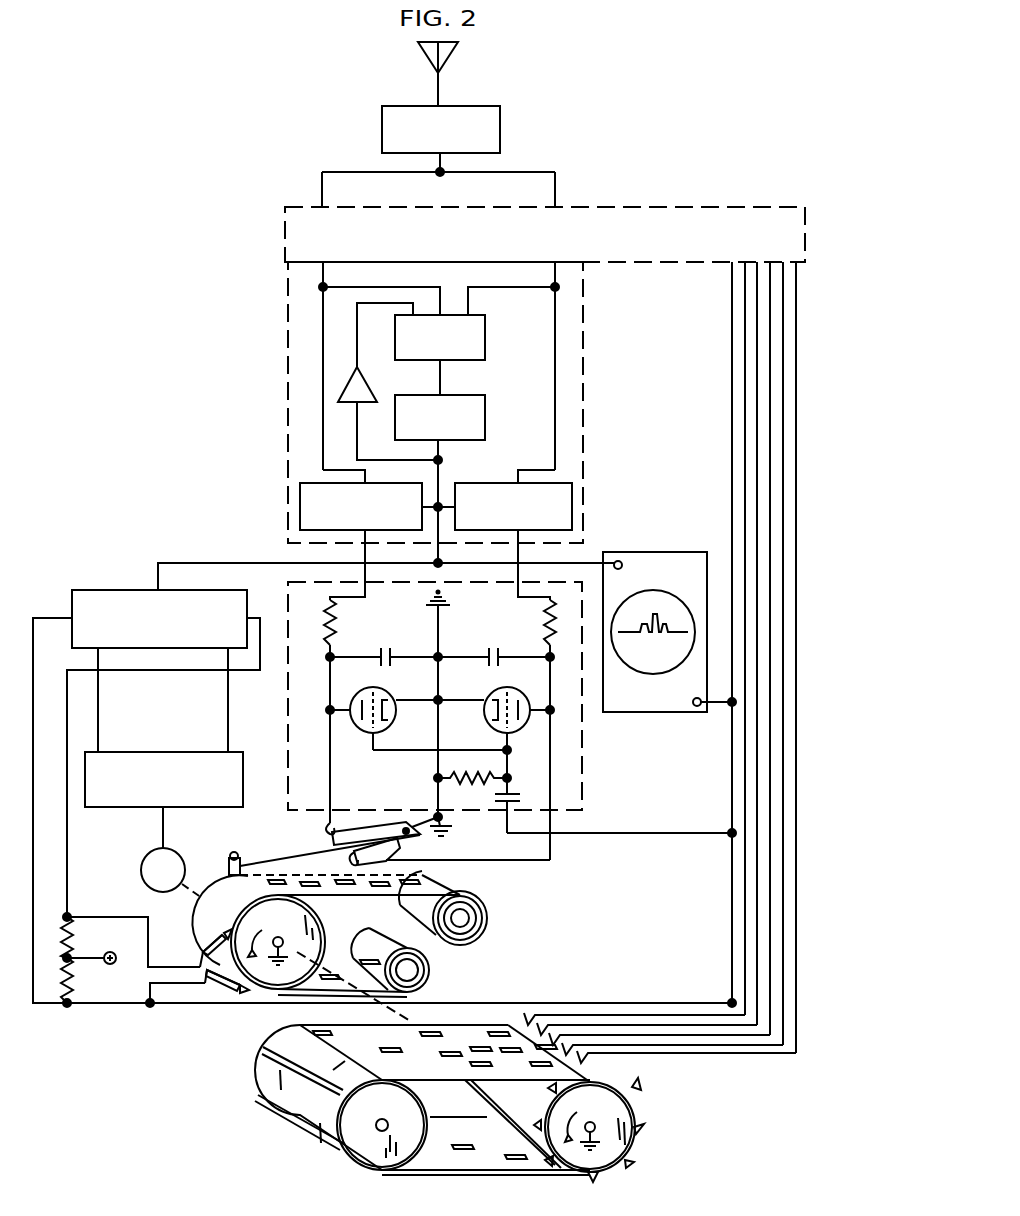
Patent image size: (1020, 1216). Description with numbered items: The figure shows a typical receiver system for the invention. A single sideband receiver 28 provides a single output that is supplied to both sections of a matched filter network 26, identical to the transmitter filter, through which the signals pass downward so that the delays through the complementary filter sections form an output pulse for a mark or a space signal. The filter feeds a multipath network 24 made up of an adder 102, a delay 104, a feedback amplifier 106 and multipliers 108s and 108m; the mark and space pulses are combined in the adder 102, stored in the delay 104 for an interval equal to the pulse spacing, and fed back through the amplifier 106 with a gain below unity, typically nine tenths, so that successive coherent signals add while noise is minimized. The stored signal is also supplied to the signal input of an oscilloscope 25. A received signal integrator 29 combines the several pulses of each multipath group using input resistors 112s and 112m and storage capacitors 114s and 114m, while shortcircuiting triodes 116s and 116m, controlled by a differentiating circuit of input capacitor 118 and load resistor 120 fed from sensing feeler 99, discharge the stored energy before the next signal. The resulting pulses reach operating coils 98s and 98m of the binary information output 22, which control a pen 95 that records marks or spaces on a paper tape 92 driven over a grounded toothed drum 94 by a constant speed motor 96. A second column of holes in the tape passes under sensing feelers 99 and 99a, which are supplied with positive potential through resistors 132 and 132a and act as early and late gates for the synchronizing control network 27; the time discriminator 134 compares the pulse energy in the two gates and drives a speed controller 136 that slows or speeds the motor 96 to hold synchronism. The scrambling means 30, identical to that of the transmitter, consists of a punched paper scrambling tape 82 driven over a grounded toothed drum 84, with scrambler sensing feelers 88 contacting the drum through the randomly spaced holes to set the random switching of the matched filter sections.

The single sideband receiver 28 is at (546, 140).
The matched filter network 26 is at (752, 247).
The multipath network 24 is at (530, 317).
The adder 102 is at (485, 345).
The delay 104 is at (485, 418).
The feedback amplifier 106 is at (367, 382).
The multiplier 108s is at (425, 492).
The multiplier 108m is at (512, 492).
The oscilloscope 25 is at (693, 586).
The received signal integrator 29 is at (420, 613).
The input resistor 112s is at (354, 622).
The input resistor 112m is at (546, 632).
The storage capacitor 114s is at (392, 650).
The storage capacitor 114m is at (487, 650).
The shortcircuiting triode 116s is at (360, 696).
The shortcircuiting triode 116m is at (500, 696).
The input capacitor 118 is at (528, 790).
The load resistor 120 is at (494, 776).
The operating coil 98s is at (392, 832).
The operating coil 98m is at (450, 851).
The time discriminator 134 is at (118, 589).
The synchronizing control network 27 is at (171, 717).
The speed controller 136 is at (116, 810).
The constant speed motor 96 is at (178, 850).
The pen 95 is at (235, 855).
The paper tape 92 is at (445, 886).
The grounded toothed drum 94 is at (335, 922).
The binary information output 22 is at (470, 987).
The sensing feeler 99 is at (227, 985).
The sensing feeler 99a is at (203, 952).
The resistor 132 is at (90, 977).
The resistor 132a is at (96, 935).
The punched paper scrambling tape 82 is at (290, 1036).
The scrambling means 30 is at (450, 1103).
The grounded toothed drum 84 is at (620, 1118).
The scrambler sensing feelers 88 is at (604, 1061).